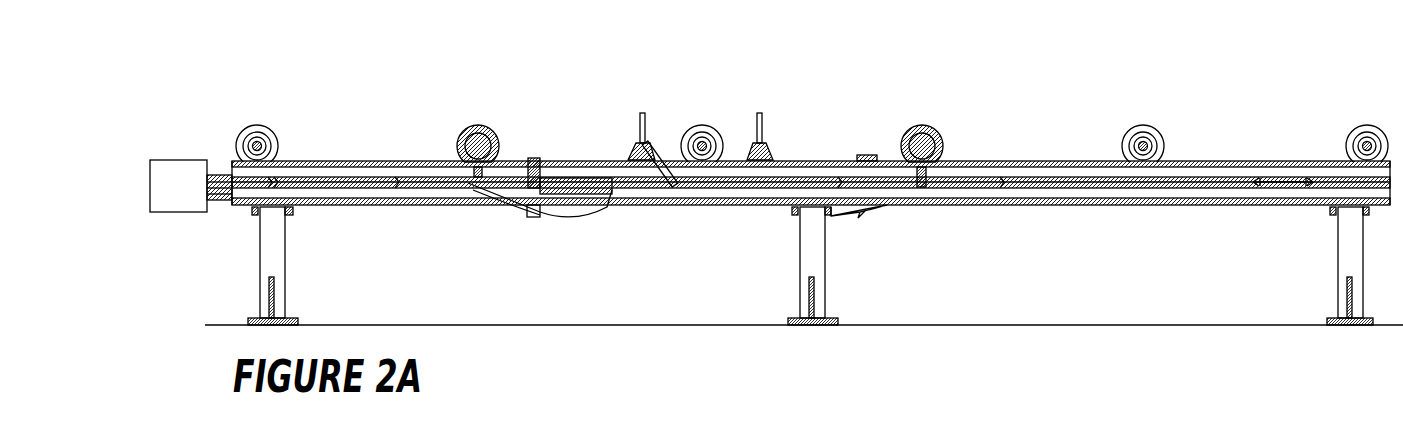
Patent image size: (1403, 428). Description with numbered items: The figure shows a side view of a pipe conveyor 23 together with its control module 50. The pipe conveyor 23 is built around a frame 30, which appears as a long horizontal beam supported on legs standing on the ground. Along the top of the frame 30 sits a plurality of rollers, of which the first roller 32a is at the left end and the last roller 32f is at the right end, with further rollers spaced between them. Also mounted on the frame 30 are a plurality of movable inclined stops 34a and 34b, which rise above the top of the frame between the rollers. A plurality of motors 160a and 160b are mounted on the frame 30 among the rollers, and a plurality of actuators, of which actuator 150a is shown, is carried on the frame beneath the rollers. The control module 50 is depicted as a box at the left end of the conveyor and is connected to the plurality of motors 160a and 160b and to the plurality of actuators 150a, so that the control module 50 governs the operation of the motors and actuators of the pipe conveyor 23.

The pipe conveyor 23 is at (1315, 55).
The frame 30 is at (1049, 159).
The roller 32a is at (256, 127).
The roller 32f is at (1365, 127).
The motor 160a is at (488, 127).
The motor 160b is at (932, 127).
The movable inclined stop 34a is at (642, 113).
The movable inclined stop 34b is at (760, 113).
The actuator 150a is at (582, 176).
The control module 50 is at (191, 186).